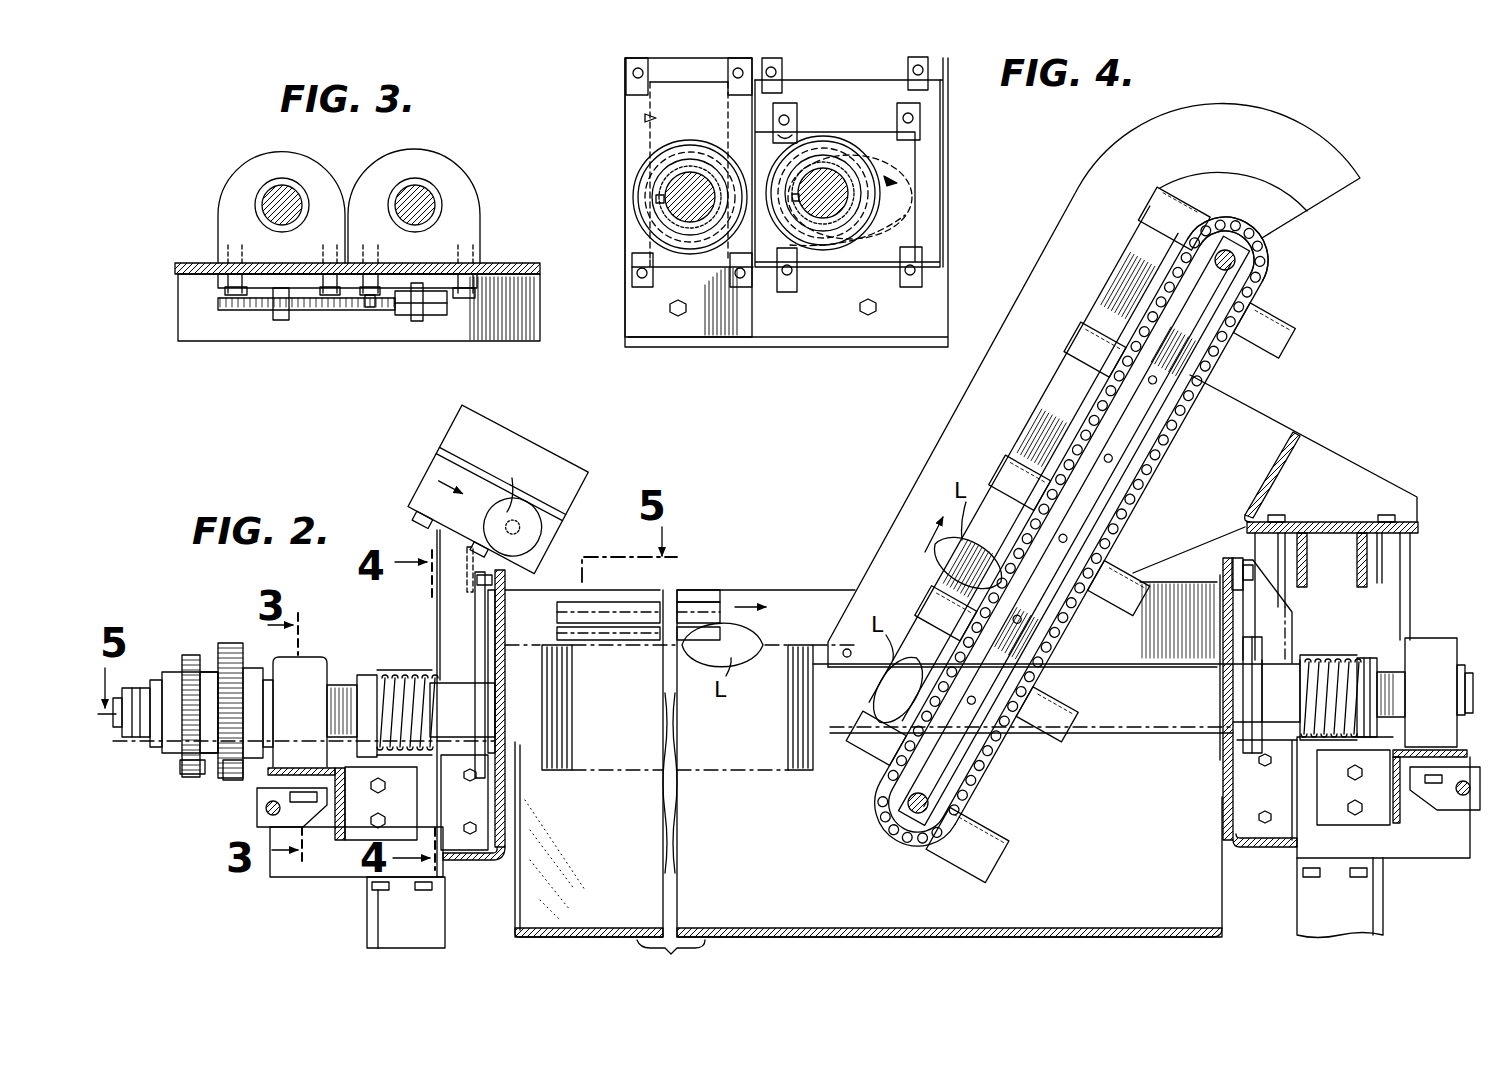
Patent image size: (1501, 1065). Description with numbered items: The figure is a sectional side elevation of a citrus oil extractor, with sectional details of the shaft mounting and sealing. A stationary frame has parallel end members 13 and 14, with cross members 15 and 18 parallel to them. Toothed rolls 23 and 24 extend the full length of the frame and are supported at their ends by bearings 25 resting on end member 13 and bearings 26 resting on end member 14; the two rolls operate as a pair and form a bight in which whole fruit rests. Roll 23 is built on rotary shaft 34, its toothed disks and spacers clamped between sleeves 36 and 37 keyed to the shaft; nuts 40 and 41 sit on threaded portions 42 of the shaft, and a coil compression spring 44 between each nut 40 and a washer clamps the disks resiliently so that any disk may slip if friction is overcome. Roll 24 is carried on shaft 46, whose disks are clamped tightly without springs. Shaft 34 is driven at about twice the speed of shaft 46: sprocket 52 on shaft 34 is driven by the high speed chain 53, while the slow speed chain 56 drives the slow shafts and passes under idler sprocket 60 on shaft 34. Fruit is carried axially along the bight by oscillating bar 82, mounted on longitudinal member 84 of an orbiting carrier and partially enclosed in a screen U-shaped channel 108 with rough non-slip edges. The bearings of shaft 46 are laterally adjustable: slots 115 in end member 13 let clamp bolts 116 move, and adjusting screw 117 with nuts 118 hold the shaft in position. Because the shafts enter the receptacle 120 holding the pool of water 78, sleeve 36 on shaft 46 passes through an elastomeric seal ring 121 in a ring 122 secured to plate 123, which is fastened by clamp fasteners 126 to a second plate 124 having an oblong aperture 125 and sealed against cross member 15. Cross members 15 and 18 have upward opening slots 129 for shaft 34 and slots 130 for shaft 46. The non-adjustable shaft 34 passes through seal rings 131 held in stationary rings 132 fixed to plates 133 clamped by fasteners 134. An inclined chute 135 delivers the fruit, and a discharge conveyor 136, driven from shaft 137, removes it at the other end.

In FIG. 3, the end member 13 is at (531, 322).
In FIG. 2, the end member 13 is at (336, 843).
In FIG. 2, the end member 14 is at (1443, 806).
In FIG. 4, the cross member 15 is at (897, 320).
In FIG. 2, the cross member 15 is at (458, 620).
In FIG. 2, the cross member 18 is at (1288, 620).
In FIG. 2, the roll 23 is at (558, 778).
In FIG. 4, the roll 24 is at (897, 183).
In FIG. 3, the bearings 25 is at (227, 221).
In FIG. 2, the bearings 25 is at (318, 659).
In FIG. 2, the bearings 26 is at (1433, 644).
In FIG. 3, the rotary shaft 34 is at (274, 188).
In FIG. 4, the rotary shaft 34 is at (690, 190).
In FIG. 2, the rotary shaft 34 is at (118, 712).
In FIG. 4, the sleeve 36 is at (660, 216).
In FIG. 2, the sleeve 36 is at (528, 745).
In FIG. 2, the sleeve 37 is at (1290, 702).
In FIG. 2, the nut 40 is at (366, 676).
In FIG. 2, the nut 41 is at (1363, 662).
In FIG. 2, the threaded portions 42 is at (334, 686).
In FIG. 2, the coil compression spring 44 is at (391, 674).
In FIG. 3, the shaft 46 is at (425, 188).
In FIG. 4, the shaft 46 is at (824, 183).
In FIG. 2, the sprocket 52 is at (233, 782).
In FIG. 2, the high speed chain 53 is at (229, 643).
In FIG. 2, the slow speed chain 56 is at (187, 776).
In FIG. 2, the idler sprocket 60 is at (193, 656).
In FIG. 2, the pool of water 78 is at (1103, 827).
In FIG. 2, the oscillating bar 82 is at (685, 616).
In FIG. 2, the longitudinal member 84 is at (710, 627).
In FIG. 2, the U-shaped channel 108 is at (628, 630).
In FIG. 3, the slots 115 is at (412, 258).
In FIG. 3, the clamp bolts 116 is at (368, 297).
In FIG. 3, the adjusting screw 117 is at (317, 310).
In FIG. 3, the nuts 118 is at (432, 318).
In FIG. 2, the receptacle 120 is at (860, 928).
In FIG. 4, the elastomeric seal ring 121 is at (823, 188).
In FIG. 4, the ring 122 is at (897, 165).
In FIG. 4, the plate 123 is at (912, 232).
In FIG. 4, the second plate 124 is at (930, 196).
In FIG. 4, the oblong aperture 125 is at (885, 150).
In FIG. 4, the clamp fasteners 126 is at (790, 115).
In FIG. 4, the upward opening slots 129 is at (645, 120).
In FIG. 4, the upward opening slots 130 is at (912, 60).
In FIG. 4, the seal rings 131 is at (660, 178).
In FIG. 4, the stationary rings 132 is at (640, 202).
In FIG. 2, the stationary rings 132 is at (472, 590).
In FIG. 4, the plates 133 is at (665, 93).
In FIG. 4, the clamp fasteners 134 is at (640, 68).
In FIG. 2, the clamp fasteners 134 is at (492, 784).
In FIG. 2, the inclined chute 135 is at (545, 466).
In FIG. 2, the discharge conveyor 136 is at (1262, 262).
In FIG. 2, the shaft 137 is at (1236, 264).